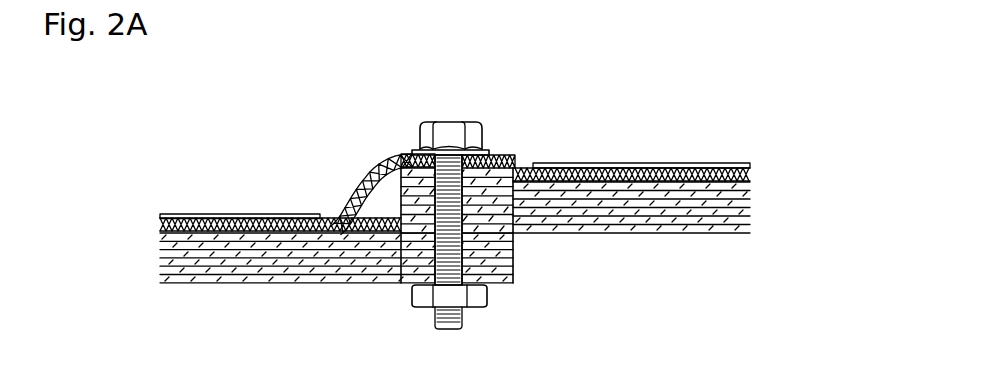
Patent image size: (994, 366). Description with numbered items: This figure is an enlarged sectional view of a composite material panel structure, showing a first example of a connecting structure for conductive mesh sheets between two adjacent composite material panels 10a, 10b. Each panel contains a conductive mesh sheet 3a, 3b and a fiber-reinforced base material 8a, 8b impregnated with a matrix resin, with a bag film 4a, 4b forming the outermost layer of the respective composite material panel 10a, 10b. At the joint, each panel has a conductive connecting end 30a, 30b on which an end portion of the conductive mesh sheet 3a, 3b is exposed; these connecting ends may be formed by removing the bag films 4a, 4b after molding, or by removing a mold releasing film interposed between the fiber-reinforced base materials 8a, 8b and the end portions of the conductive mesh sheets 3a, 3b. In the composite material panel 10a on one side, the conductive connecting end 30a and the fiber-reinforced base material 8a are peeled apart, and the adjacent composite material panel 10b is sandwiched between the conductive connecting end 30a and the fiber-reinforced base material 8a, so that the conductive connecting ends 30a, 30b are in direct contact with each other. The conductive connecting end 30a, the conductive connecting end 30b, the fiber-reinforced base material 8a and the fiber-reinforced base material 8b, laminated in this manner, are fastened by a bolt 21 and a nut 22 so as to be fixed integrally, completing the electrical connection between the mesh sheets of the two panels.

The composite material panel 10a is at (336, 233).
The composite material panel 10b is at (631, 185).
The bag film 4a is at (262, 214).
The bag film 4b is at (645, 163).
The conductive mesh sheet 3a is at (305, 228).
The conductive mesh sheet 3b is at (615, 178).
The fiber-reinforced base material 8a is at (279, 268).
The fiber-reinforced base material 8b is at (666, 218).
The conductive connecting end 30a is at (411, 156).
The conductive connecting end 30b is at (515, 160).
The bolt 21 is at (462, 122).
The nut 22 is at (487, 297).